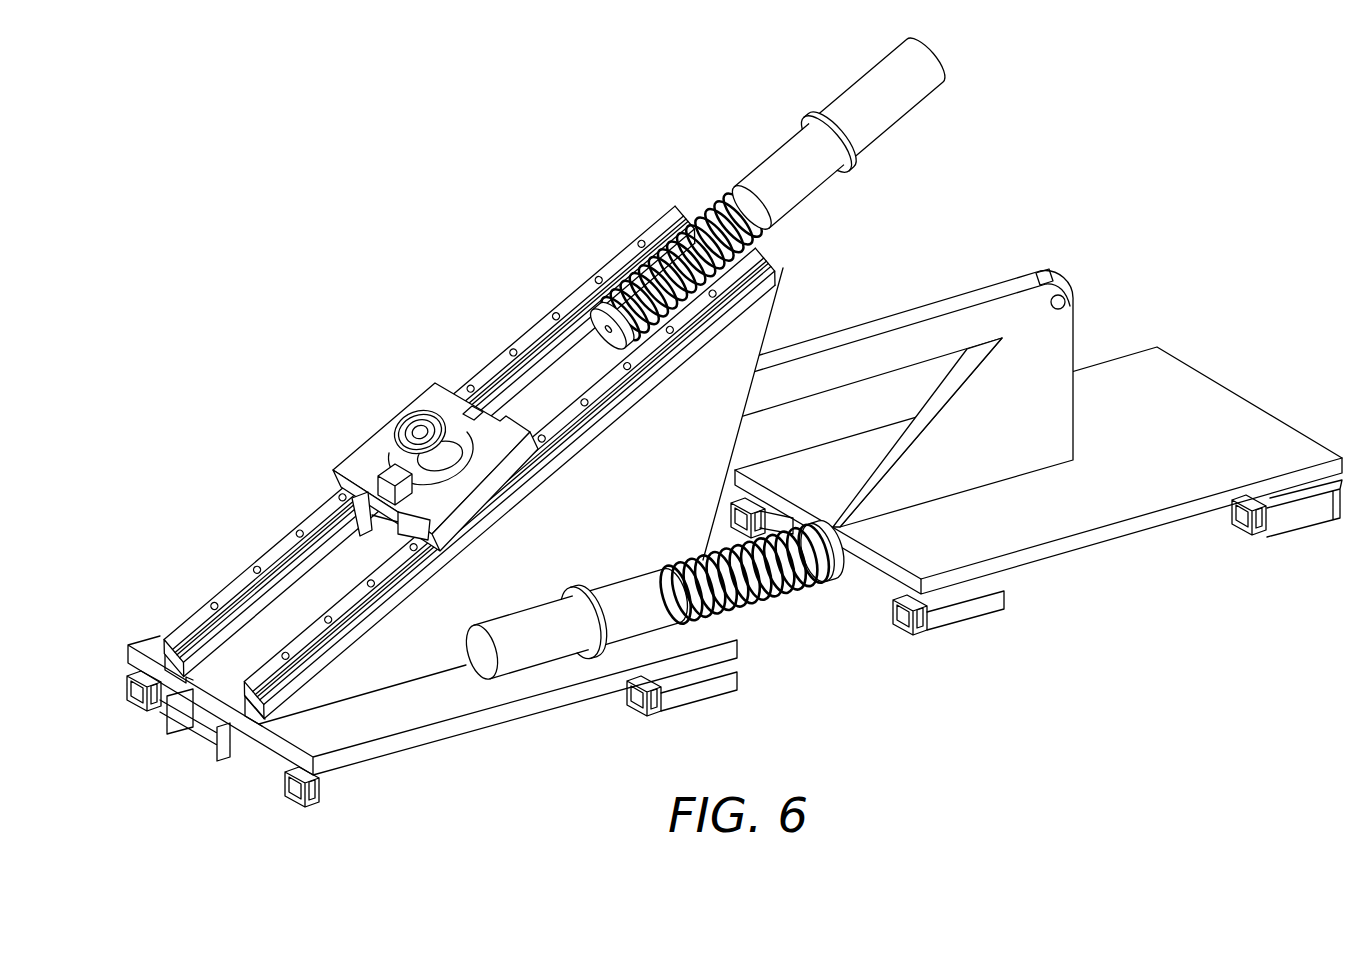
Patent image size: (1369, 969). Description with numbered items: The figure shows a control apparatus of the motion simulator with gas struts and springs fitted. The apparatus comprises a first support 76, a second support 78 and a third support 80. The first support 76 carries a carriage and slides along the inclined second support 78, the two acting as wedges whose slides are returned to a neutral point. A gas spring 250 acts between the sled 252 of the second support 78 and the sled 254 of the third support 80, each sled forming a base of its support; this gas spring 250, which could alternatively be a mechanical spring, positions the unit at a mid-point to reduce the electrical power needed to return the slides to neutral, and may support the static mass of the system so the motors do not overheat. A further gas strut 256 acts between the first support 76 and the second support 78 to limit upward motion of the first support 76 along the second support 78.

The first support 76 is at (367, 455).
The second support 78 is at (296, 735).
The third support 80 is at (1170, 528).
The gas spring 250 is at (672, 618).
The sled 252 is at (440, 712).
The sled 254 is at (1058, 522).
The gas strut 256 is at (912, 108).